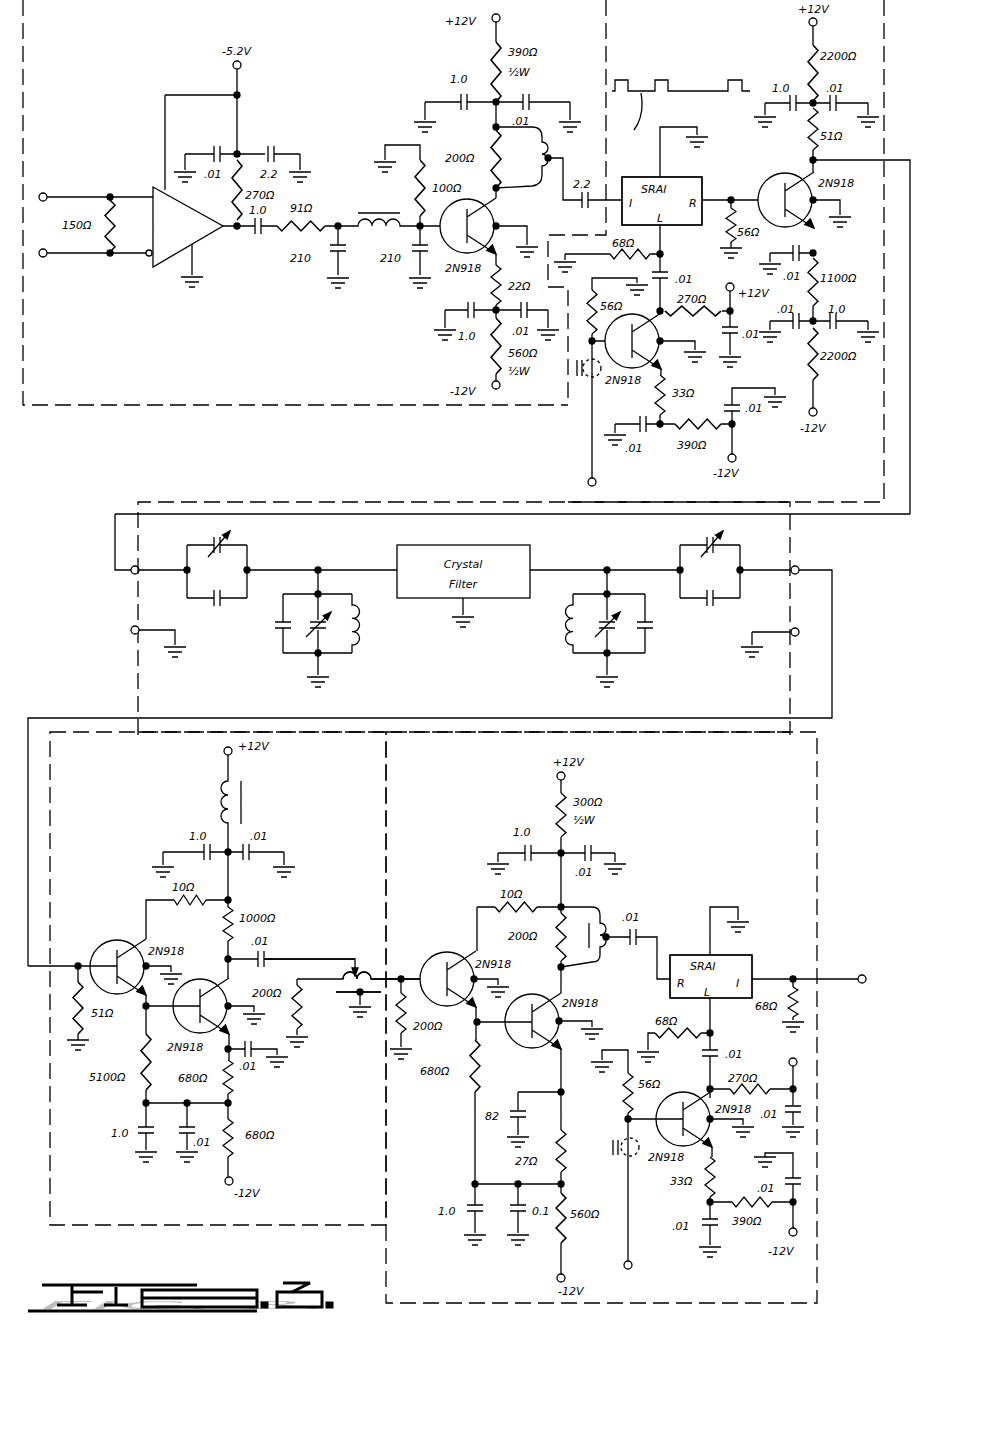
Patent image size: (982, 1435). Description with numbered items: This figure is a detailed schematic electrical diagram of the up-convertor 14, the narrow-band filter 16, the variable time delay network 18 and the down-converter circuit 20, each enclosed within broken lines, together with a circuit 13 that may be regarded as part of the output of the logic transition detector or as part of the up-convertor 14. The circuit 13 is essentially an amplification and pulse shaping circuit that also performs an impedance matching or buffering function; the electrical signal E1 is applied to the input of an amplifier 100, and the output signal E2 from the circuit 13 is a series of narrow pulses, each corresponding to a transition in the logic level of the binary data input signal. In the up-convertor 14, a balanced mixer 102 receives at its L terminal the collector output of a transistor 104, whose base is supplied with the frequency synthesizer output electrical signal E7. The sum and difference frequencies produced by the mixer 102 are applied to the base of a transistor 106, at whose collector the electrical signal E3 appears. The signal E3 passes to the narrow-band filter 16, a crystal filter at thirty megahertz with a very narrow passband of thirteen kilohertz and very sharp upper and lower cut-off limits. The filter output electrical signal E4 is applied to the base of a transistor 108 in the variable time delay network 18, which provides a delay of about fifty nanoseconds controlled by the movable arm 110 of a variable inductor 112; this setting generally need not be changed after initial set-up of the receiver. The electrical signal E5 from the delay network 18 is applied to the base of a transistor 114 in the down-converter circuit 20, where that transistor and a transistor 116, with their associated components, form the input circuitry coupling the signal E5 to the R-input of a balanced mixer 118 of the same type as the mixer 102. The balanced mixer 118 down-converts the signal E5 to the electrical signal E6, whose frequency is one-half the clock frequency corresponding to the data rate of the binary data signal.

The amplification and pulse shaping circuit 13 is at (314, 202).
The up-convertor 14 is at (726, 251).
The narrow-band filter 16 is at (464, 618).
The variable time delay network 18 is at (218, 978).
The down-converter circuit 20 is at (601, 1017).
The amplifier 100 is at (176, 244).
The balanced mixer 102 is at (679, 188).
The transistor 104 is at (652, 341).
The transistor 106 is at (786, 187).
The transistor 108 is at (113, 946).
The movable arm 110 is at (309, 933).
The variable inductor 112 is at (358, 961).
The transistor 114 is at (448, 954).
The transistor 116 is at (533, 1010).
The balanced mixer 118 is at (731, 962).
The electrical signal E1 is at (60, 210).
The output signal E2 is at (679, 140).
The electrical signal E3 is at (513, 427).
The filter output electrical signal E4 is at (427, 774).
The electrical signal E5 is at (400, 946).
The electrical signal E6 is at (861, 959).
The frequency synthesizer output electrical signal E7 is at (613, 476).